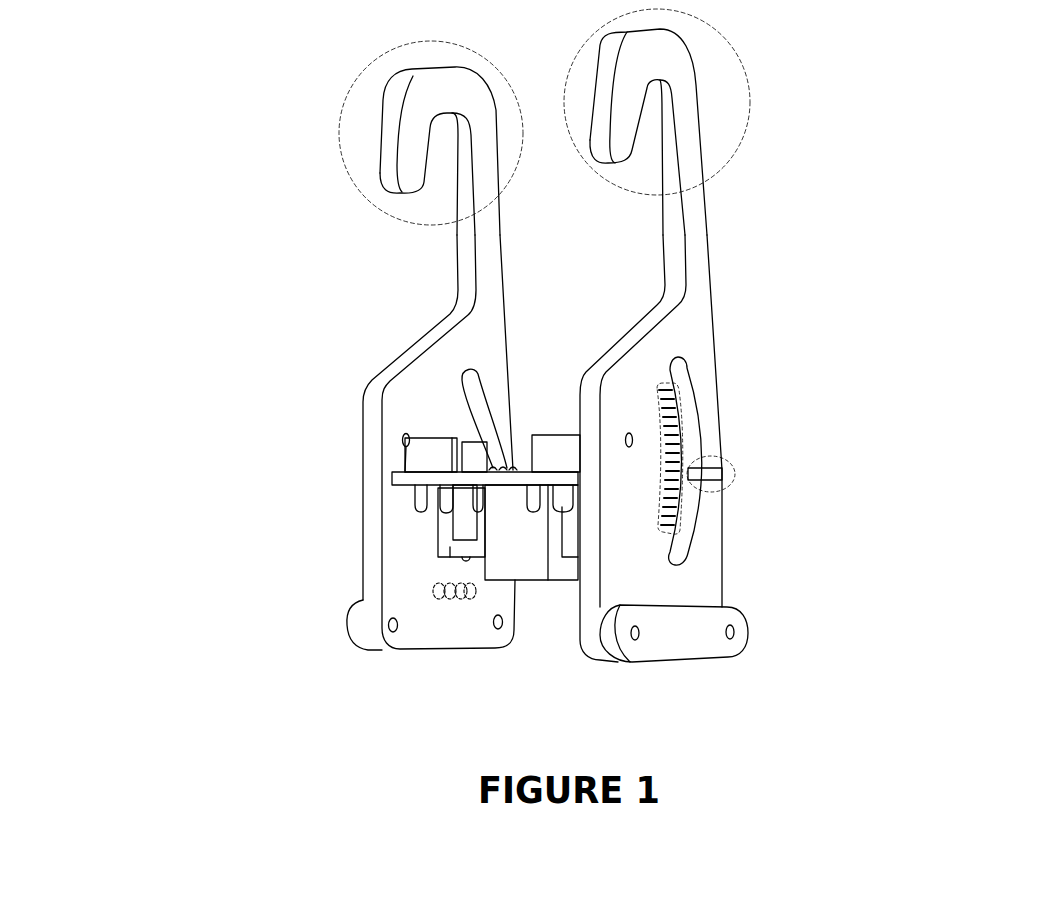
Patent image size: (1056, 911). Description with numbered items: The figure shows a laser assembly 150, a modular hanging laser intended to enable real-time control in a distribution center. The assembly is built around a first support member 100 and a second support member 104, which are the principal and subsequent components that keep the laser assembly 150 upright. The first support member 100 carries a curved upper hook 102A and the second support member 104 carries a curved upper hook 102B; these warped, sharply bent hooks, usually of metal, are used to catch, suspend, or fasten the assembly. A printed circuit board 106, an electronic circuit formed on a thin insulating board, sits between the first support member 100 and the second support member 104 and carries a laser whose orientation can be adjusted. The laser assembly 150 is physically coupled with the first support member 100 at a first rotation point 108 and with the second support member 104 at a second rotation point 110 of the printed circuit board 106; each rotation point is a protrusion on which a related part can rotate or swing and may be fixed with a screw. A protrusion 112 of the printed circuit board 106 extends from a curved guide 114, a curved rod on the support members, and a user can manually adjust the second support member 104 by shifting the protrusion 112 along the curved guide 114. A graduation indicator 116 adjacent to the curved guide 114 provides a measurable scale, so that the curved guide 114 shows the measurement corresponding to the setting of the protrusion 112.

The first support member 100 is at (420, 382).
The curved upper hook 102A is at (345, 118).
The curved upper hook 102B is at (733, 50).
The second support member 104 is at (703, 268).
The printed circuit board 106 is at (513, 468).
The first rotation point 108 is at (402, 440).
The second rotation point 110 is at (636, 440).
The protrusion 112 is at (727, 488).
The curved guide 114 is at (687, 563).
The graduation indicator 116 is at (673, 385).
The laser assembly 150 is at (158, 668).